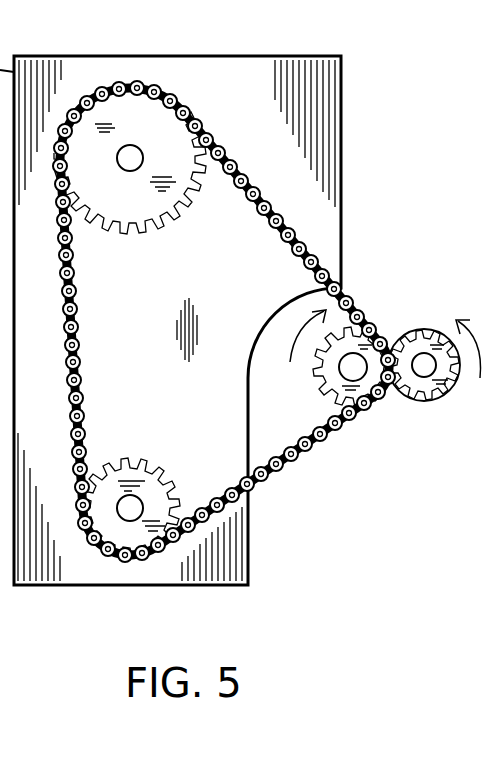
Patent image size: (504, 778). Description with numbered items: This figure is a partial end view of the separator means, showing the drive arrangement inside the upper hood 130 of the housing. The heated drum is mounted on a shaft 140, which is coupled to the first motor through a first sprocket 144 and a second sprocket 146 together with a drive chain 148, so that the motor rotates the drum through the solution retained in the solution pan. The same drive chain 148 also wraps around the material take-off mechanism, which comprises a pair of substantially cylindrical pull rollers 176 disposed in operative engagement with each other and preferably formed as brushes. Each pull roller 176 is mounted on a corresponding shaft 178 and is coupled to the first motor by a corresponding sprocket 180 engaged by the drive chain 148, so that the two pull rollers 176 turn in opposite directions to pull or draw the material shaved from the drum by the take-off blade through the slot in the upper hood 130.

The upper hood 130 is at (228, 56).
The shaft 140 is at (134, 150).
The first sprocket 144 is at (133, 457).
The second sprocket 146 is at (126, 236).
The drive chain 148 is at (70, 313).
The pull rollers 176 is at (318, 386).
The shaft 178 is at (353, 347).
The sprocket 180 is at (325, 395).